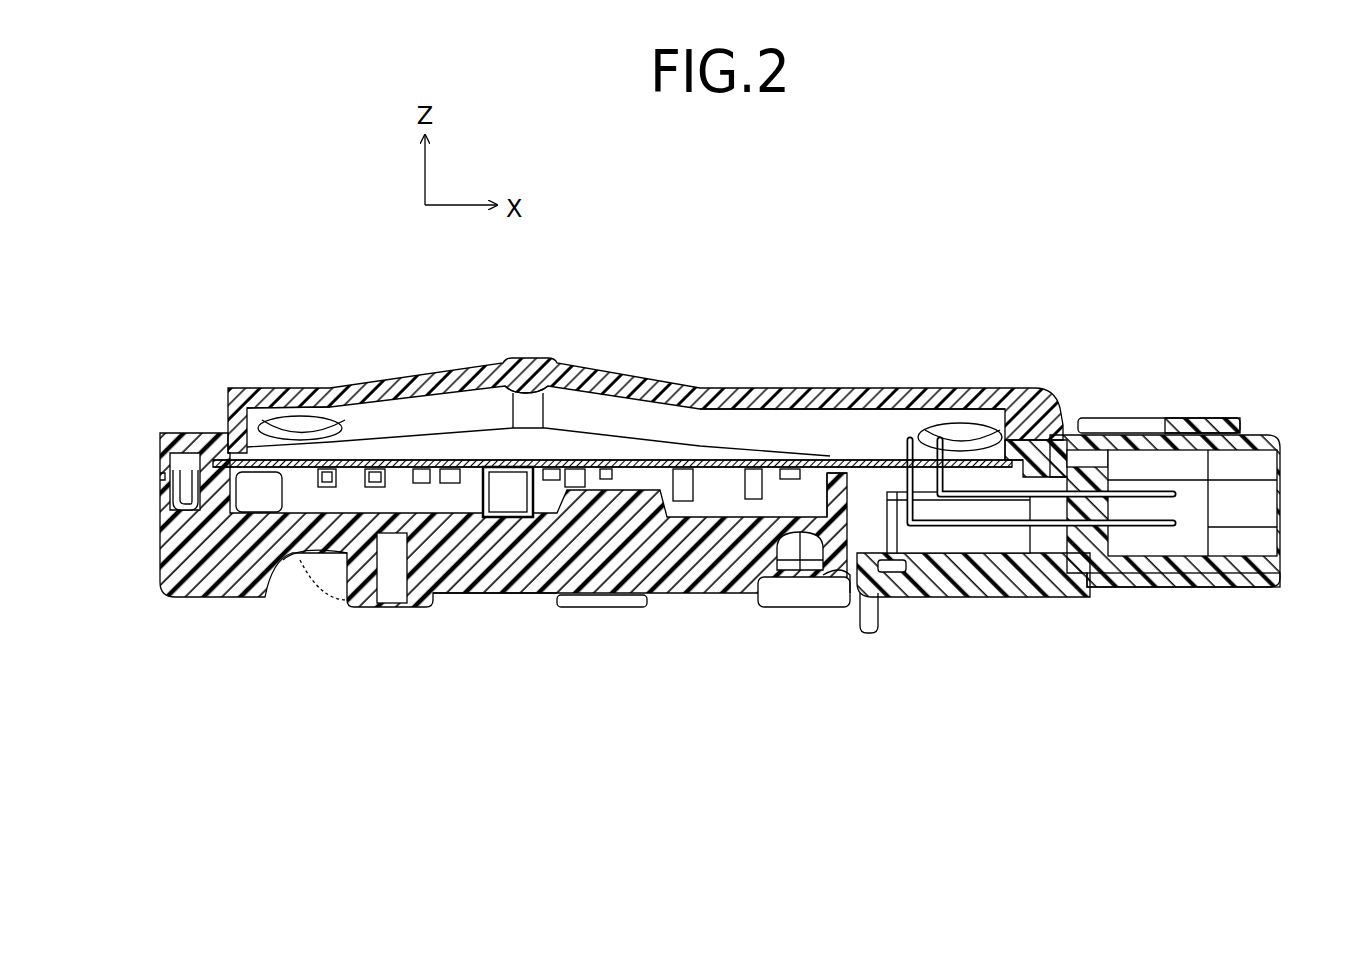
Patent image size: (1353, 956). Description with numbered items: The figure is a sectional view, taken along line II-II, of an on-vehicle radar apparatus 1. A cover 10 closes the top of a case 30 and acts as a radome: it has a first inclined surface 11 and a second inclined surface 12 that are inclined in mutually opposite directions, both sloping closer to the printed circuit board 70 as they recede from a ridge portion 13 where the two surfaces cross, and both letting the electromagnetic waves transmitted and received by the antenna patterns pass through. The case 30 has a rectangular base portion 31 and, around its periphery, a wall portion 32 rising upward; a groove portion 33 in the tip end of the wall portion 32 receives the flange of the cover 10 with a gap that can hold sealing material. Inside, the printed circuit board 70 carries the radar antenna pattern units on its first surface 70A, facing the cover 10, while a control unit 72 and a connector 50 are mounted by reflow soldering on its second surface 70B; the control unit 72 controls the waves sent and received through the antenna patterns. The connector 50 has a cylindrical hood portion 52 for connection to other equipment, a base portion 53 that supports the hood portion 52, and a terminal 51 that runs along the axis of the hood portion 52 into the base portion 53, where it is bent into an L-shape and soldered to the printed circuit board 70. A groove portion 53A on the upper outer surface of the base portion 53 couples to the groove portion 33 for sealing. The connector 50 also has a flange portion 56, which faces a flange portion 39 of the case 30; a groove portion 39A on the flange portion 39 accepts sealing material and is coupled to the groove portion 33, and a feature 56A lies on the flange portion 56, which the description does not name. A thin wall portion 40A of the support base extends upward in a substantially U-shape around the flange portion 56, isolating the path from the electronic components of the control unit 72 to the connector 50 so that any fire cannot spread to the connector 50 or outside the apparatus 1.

The on-vehicle radar apparatus 1 is at (262, 240).
The cover 10 is at (1025, 388).
The first inclined surface 11 is at (415, 372).
The second inclined surface 12 is at (622, 380).
The ridge portion 13 is at (530, 357).
The case 30 is at (155, 530).
The base portion 31 is at (633, 570).
The wall portion 32 is at (160, 447).
The groove portion 33 is at (186, 482).
The flange portion 39 is at (858, 596).
The groove portion 39A is at (827, 583).
The wall portion 40A is at (835, 495).
The connector 50 is at (1256, 418).
The terminal 51 is at (1173, 494).
The hood portion 52 is at (1283, 433).
The base portion 53 is at (990, 583).
The groove portion 53A is at (1023, 458).
The flange portion 56 is at (917, 573).
The support projection 56A is at (885, 572).
The printed circuit board 70 is at (613, 457).
The first surface 70A is at (670, 460).
The second surface 70B is at (680, 475).
The control unit 72 is at (507, 497).